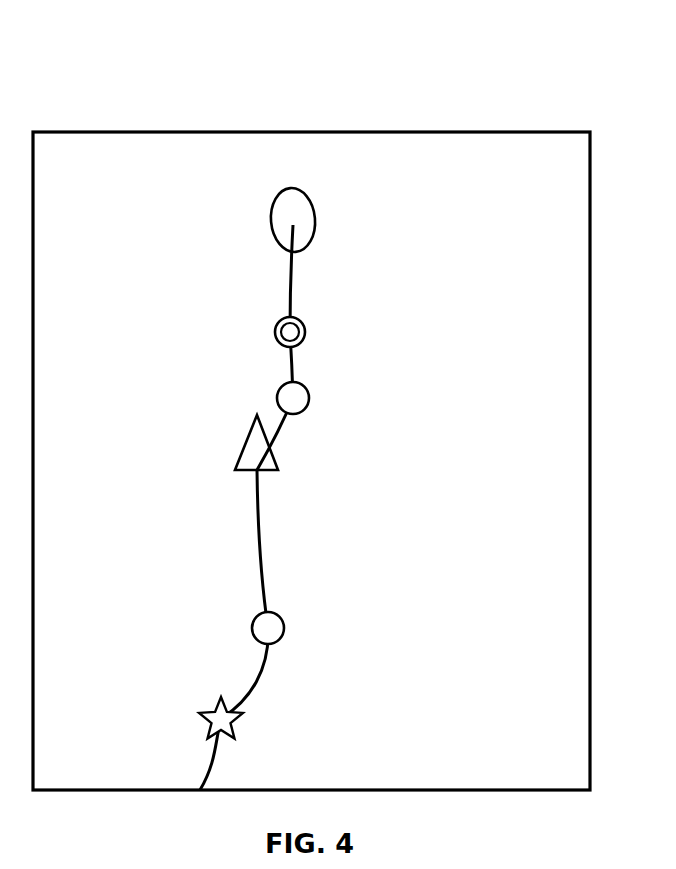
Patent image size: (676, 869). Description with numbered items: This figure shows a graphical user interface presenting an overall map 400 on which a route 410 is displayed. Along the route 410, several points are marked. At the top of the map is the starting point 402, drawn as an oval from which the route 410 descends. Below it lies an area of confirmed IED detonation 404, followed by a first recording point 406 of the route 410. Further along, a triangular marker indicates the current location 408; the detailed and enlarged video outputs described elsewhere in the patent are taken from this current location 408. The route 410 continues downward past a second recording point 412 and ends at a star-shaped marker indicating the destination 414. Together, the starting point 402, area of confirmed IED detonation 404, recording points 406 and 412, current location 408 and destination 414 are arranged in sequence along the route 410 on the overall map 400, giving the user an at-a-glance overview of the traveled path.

The overall map 400 is at (562, 89).
The starting point 402 is at (313, 207).
The area of confirmed IED detonation 404 is at (306, 323).
The recording point 406 is at (310, 394).
The current location 408 is at (246, 446).
The route 410 is at (279, 546).
The recording point 412 is at (284, 622).
The destination 414 is at (209, 711).